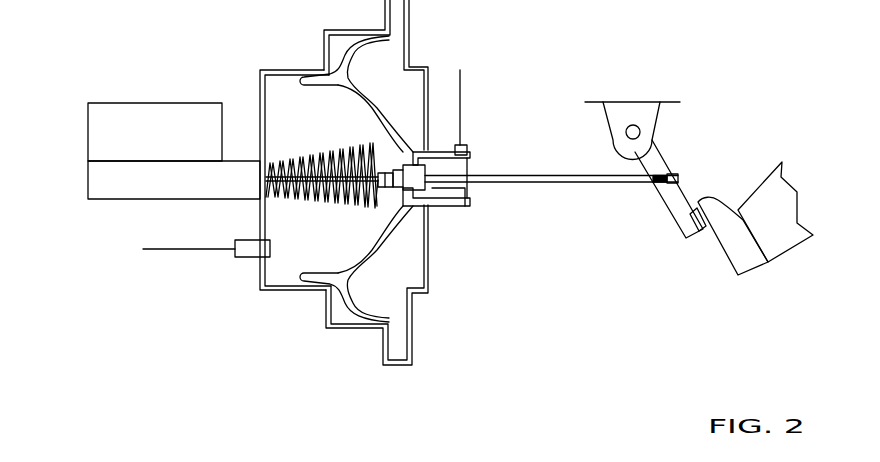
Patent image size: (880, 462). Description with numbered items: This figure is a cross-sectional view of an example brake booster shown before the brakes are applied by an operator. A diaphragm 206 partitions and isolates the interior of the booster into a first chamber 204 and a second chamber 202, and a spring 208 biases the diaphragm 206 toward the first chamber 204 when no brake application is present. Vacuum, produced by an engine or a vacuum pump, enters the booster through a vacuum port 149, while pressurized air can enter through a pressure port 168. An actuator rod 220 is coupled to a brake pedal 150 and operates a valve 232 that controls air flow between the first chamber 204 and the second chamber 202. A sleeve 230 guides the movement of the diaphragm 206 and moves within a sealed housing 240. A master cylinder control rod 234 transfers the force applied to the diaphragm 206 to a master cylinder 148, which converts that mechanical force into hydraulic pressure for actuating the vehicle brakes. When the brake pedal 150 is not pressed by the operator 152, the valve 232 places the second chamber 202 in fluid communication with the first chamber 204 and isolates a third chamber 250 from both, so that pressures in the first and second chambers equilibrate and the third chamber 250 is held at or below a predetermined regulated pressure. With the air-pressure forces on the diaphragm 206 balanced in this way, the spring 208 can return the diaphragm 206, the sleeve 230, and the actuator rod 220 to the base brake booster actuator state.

The master cylinder 148 is at (87, 103).
The vacuum port 149 is at (250, 258).
The brake pedal 150 is at (683, 240).
The operator 152 is at (783, 174).
The pressure port 168 is at (466, 145).
The second chamber 202 is at (312, 114).
The first chamber 204 is at (397, 82).
The diaphragm 206 is at (381, 230).
The spring 208 is at (325, 204).
The actuator rod 220 is at (621, 184).
The sleeve 230 is at (470, 160).
The valve 232 is at (409, 195).
The master cylinder control rod 234 is at (277, 158).
The sealed housing 240 is at (440, 217).
The third chamber 250 is at (468, 192).